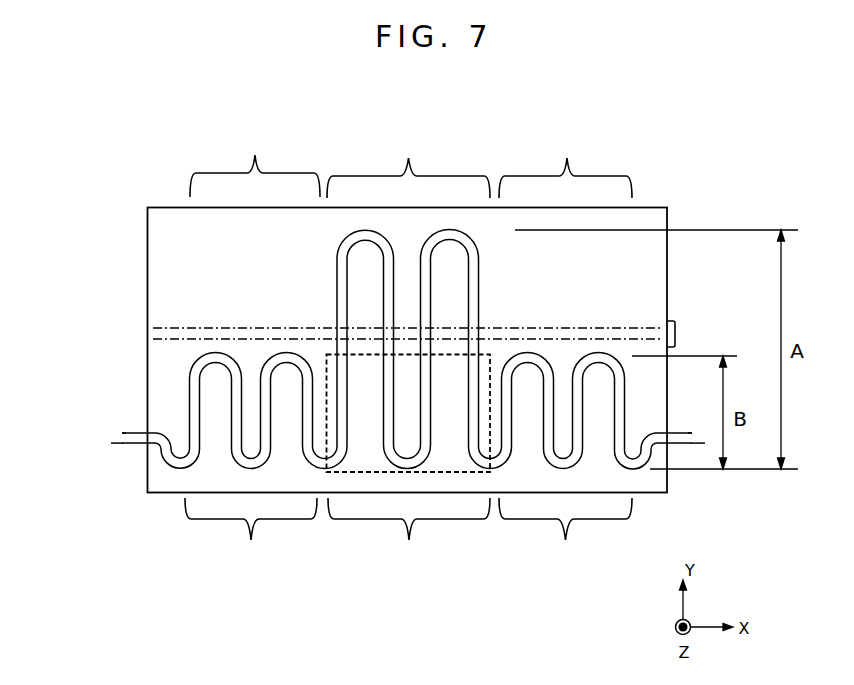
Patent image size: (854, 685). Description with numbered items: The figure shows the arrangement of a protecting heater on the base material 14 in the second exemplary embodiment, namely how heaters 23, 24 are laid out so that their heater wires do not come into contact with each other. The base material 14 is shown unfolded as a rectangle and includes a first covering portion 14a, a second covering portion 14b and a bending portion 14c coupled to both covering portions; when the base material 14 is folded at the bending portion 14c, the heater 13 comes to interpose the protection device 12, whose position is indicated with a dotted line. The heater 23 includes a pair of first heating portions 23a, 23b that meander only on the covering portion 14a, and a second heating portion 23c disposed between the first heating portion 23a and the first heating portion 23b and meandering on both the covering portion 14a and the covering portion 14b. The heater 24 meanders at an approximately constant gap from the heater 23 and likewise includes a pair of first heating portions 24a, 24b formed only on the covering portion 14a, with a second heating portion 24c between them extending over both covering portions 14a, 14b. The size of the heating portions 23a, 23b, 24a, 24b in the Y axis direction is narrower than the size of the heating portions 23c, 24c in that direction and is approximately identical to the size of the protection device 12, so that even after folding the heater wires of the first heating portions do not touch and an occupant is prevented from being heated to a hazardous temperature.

The protection device 12 is at (353, 472).
The heater 13 is at (75, 350).
The base material 14 is at (163, 206).
The first covering portion 14a is at (165, 474).
The second covering portion 14b is at (161, 266).
The bending portion 14c is at (675, 334).
The heater 23 is at (135, 432).
The first heating portion 23a is at (255, 163).
The first heating portion 23b is at (565, 164).
The second heating portion 23c is at (408, 163).
The heater 24 is at (115, 442).
The first heating portion 24a is at (251, 536).
The first heating portion 24b is at (565, 536).
The second heating portion 24c is at (409, 536).